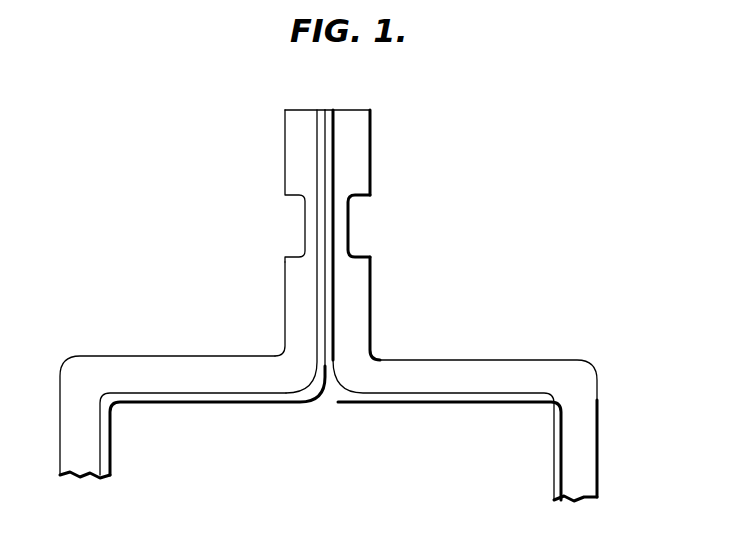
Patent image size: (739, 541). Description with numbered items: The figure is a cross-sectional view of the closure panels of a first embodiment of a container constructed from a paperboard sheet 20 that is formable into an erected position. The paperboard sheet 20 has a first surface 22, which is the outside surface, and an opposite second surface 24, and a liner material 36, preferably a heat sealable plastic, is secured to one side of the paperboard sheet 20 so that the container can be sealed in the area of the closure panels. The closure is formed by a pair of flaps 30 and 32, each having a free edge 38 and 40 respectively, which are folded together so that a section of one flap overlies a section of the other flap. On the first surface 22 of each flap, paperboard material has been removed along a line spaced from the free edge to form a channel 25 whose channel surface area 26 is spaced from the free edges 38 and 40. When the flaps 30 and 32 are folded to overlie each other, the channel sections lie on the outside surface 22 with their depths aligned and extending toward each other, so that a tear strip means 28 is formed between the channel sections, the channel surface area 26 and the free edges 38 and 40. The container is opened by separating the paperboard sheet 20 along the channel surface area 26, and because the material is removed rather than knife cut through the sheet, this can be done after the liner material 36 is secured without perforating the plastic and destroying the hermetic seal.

The paperboard sheet 20 is at (588, 463).
The first surface 22 is at (528, 360).
The second surface 24 is at (435, 395).
The channel 25 is at (403, 225).
The channel surface area 26 is at (352, 212).
The tear strip means 28 is at (355, 145).
The flap 30 is at (357, 295).
The flap 32 is at (295, 302).
The liner material 36 is at (564, 437).
The free edge 38 is at (362, 109).
The free edge 40 is at (298, 109).